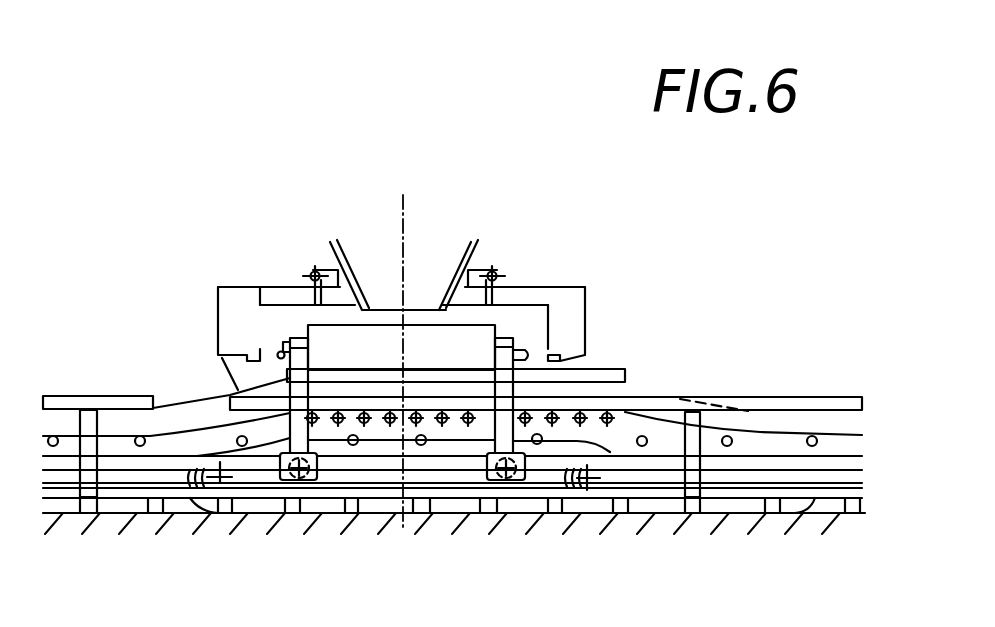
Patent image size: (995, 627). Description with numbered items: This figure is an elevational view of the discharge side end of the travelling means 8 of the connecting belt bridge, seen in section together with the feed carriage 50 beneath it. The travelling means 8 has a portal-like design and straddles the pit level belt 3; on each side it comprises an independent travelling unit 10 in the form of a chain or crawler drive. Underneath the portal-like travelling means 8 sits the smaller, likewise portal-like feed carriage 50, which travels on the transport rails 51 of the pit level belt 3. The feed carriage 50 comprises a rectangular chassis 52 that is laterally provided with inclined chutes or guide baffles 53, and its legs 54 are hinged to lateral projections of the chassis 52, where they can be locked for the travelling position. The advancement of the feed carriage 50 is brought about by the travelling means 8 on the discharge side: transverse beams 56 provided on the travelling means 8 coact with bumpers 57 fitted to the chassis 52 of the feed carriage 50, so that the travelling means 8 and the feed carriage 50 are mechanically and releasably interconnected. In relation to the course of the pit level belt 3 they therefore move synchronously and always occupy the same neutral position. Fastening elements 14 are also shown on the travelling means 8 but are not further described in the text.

The pit level belt 3 is at (188, 412).
The travelling means 8 is at (603, 279).
The travelling unit 10 is at (608, 450).
The bolt 14 is at (494, 270).
The feed carriage 50 is at (268, 374).
The transport rails 51 is at (732, 498).
The chassis 52 is at (508, 346).
The guide baffles 53 is at (377, 337).
The legs 54 is at (503, 437).
The transverse beams 56 is at (586, 320).
The bumpers 57 is at (281, 347).